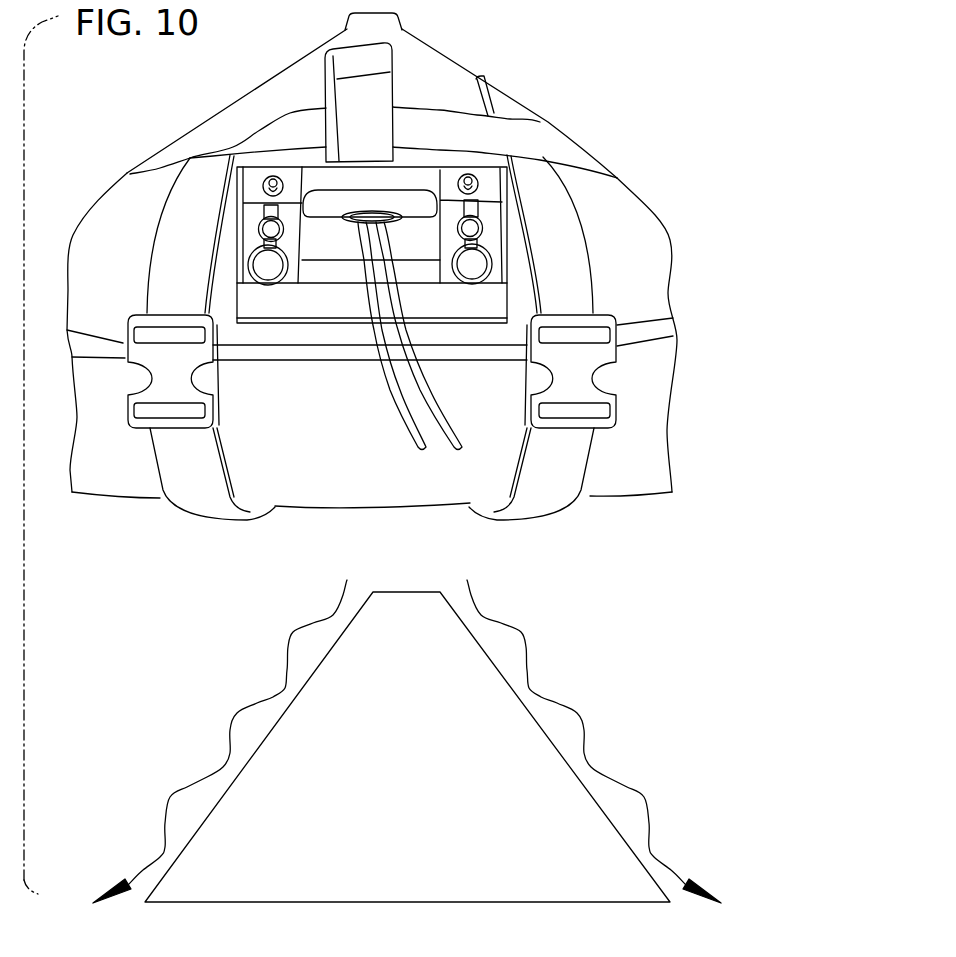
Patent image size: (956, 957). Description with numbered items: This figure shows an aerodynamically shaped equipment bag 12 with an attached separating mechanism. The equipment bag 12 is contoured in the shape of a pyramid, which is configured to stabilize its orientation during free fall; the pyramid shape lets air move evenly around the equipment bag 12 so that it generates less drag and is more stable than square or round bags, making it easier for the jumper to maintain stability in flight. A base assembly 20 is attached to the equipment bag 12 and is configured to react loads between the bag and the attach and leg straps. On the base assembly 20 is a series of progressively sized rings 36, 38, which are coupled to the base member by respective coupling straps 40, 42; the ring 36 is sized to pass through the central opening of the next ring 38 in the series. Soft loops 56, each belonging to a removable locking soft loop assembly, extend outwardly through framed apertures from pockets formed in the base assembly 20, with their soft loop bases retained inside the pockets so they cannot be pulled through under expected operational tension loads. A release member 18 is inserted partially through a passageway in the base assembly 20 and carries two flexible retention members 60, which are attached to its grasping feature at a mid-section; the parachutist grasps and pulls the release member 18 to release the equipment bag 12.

The equipment bag 12 is at (438, 80).
The release member 18 is at (375, 117).
The base assembly 20 is at (535, 160).
The ring 36 is at (258, 229).
The ring 38 is at (250, 262).
The coupling strap 40 is at (262, 212).
The coupling strap 42 is at (262, 245).
The soft loop 56 is at (276, 178).
The flexible retention member 60 is at (440, 397).